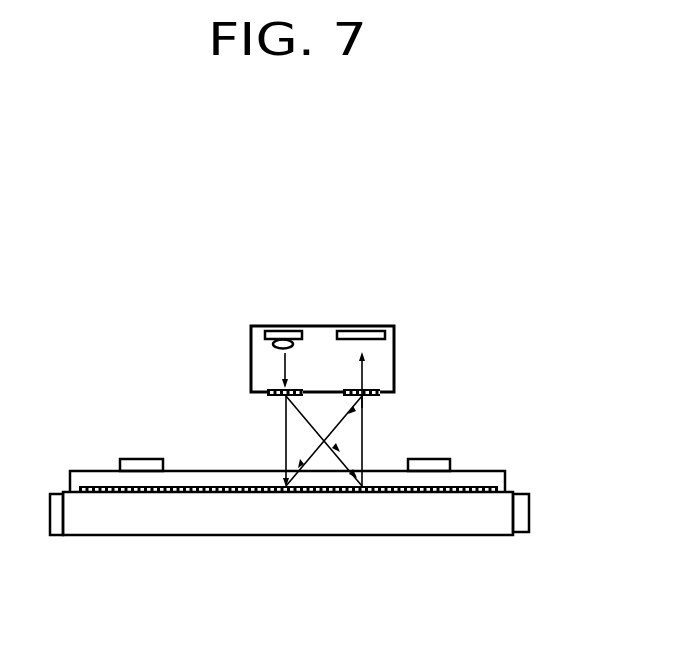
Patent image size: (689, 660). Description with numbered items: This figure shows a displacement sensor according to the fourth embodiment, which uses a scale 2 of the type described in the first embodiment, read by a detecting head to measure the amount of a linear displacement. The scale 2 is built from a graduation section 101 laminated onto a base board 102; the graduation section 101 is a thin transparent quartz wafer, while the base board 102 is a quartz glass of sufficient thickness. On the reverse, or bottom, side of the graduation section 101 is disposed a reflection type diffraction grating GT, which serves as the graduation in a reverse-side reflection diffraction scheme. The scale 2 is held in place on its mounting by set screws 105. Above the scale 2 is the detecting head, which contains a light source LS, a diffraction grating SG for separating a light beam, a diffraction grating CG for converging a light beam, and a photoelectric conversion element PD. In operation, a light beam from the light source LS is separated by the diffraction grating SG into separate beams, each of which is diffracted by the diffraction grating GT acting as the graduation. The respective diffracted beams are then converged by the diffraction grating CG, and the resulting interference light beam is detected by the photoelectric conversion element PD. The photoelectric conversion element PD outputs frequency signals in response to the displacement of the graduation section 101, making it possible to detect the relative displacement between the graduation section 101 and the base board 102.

The scale 2 is at (250, 363).
The light source LS is at (262, 331).
The photoelectric conversion element PD is at (353, 327).
The diffraction grating for separating a light beam SG is at (272, 397).
The diffraction grating for converging a light beam CG is at (378, 390).
The reflection type diffraction grating GT is at (338, 493).
The graduation section 101 is at (500, 470).
The base board 102 is at (492, 523).
The set screw 105 is at (137, 463).